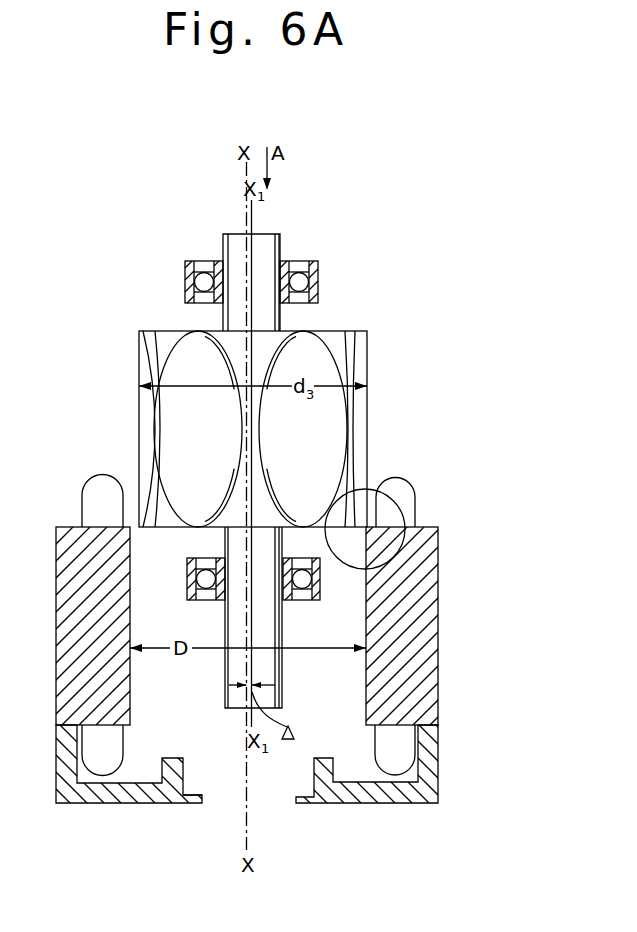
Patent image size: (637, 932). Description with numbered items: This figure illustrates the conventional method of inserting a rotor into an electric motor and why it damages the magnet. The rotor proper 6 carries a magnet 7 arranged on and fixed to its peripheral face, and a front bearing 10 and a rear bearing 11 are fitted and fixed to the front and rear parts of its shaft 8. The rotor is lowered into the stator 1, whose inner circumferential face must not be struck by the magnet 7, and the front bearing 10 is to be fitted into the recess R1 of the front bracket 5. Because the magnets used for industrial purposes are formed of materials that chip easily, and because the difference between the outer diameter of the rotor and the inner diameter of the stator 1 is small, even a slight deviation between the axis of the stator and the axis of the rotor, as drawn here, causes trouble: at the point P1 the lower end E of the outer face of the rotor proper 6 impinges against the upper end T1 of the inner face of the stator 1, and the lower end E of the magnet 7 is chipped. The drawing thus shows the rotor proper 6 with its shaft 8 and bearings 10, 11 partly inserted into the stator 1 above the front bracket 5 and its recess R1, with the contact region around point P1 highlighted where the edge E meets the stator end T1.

The stator 1 is at (60, 610).
The front bracket 5 is at (103, 804).
The rotor proper 6 is at (344, 330).
The magnet 7 is at (165, 428).
The shaft 8 is at (223, 670).
The front bearing 10 is at (305, 602).
The rear bearing 11 is at (318, 282).
The upper end of the inner face of the stator T1 is at (428, 497).
The point of impingement P1 is at (388, 490).
The recess R1 is at (186, 784).
The lower end of the outer face of the rotor E is at (140, 529).